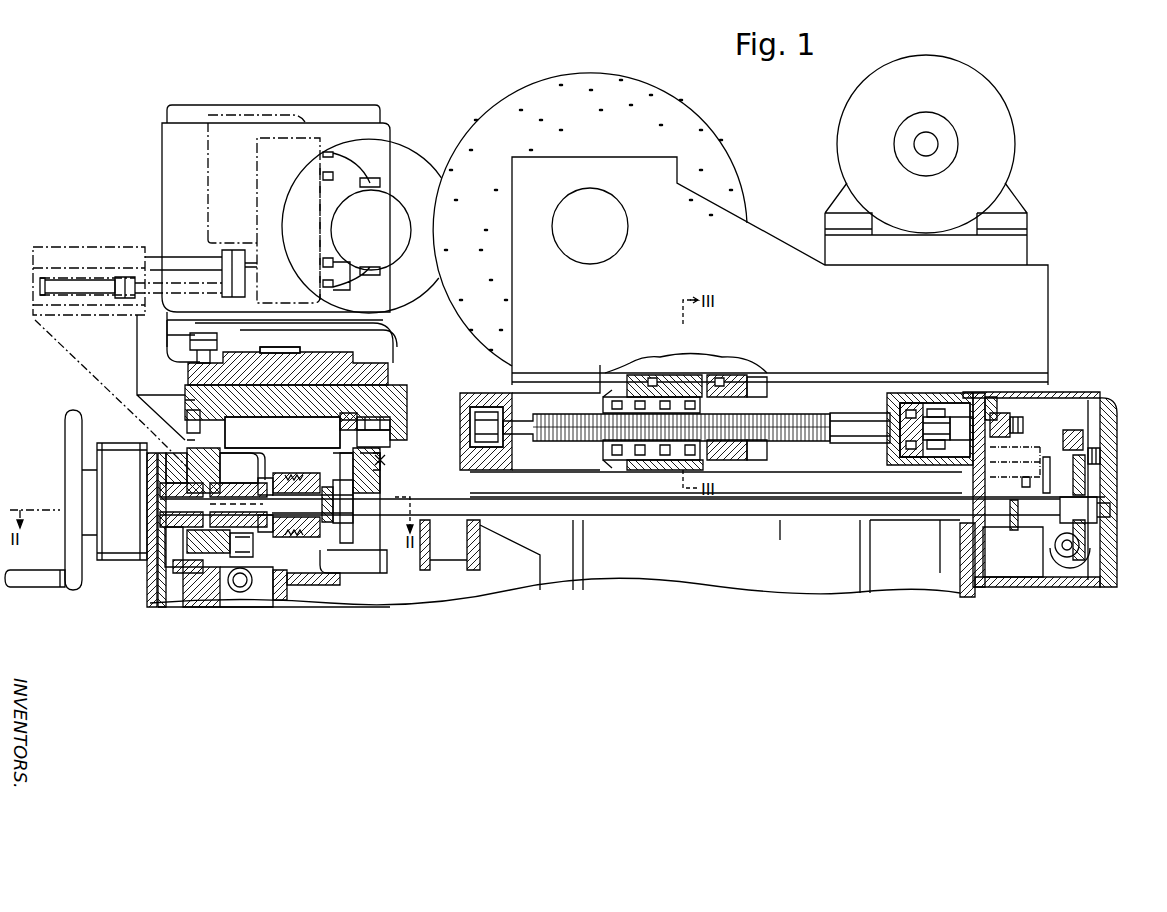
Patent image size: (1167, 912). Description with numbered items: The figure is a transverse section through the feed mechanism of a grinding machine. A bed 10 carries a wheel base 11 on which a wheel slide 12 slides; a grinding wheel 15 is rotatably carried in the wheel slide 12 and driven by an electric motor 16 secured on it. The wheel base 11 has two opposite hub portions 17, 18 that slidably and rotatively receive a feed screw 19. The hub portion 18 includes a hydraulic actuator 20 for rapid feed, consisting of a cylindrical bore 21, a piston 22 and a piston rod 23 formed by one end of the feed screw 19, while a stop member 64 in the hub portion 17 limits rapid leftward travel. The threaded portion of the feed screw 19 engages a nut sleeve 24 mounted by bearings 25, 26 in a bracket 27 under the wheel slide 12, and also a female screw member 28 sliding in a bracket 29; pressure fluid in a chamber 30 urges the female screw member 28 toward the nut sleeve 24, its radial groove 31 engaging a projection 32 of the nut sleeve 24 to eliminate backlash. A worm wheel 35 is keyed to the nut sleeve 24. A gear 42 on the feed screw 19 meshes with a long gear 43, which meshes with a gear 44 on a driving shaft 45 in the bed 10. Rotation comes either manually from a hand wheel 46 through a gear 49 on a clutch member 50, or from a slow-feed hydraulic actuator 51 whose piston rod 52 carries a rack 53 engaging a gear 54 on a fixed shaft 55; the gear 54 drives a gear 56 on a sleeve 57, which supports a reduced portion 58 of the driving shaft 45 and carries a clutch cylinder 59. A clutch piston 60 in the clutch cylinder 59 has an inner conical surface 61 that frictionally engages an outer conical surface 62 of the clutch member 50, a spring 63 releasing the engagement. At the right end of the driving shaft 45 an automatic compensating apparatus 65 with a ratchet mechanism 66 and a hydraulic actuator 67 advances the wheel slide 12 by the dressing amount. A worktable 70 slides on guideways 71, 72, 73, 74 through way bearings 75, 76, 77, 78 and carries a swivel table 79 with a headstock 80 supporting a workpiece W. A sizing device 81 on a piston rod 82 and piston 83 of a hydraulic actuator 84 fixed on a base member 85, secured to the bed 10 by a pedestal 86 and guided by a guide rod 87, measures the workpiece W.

The bed 10 is at (961, 581).
The wheel base 11 is at (555, 562).
The wheel slide 12 is at (755, 253).
The grinding wheel 15 is at (690, 125).
The electric motor 16 is at (1008, 130).
The hub portion 17 is at (754, 413).
The hub portion 18 is at (875, 393).
The feed screw 19 is at (782, 442).
The hydraulic actuator 20 is at (964, 416).
The cylindrical bore 21 is at (938, 416).
The piston 22 is at (908, 401).
The piston rod 23 is at (945, 406).
The nut sleeve 24 is at (603, 460).
The bearing 25 is at (593, 370).
The bearing 26 is at (690, 375).
The bracket 27 is at (787, 517).
The female screw member 28 is at (758, 413).
The bracket 29 is at (762, 541).
The chamber 30 is at (753, 383).
The radial groove 31 is at (722, 376).
The projection 32 is at (573, 555).
The worm wheel 35 is at (633, 555).
The gear 42 is at (987, 394).
The gear 43 is at (1027, 443).
The gear 44 is at (1013, 538).
The driving shaft 45 is at (900, 522).
The hand wheel 46 is at (73, 592).
The gear 49 is at (305, 543).
The clutch member 50 is at (315, 595).
The hydraulic actuator 51 is at (180, 610).
The piston rod 52 is at (222, 600).
The rack 53 is at (238, 585).
The gear 54 is at (170, 610).
The shaft 55 is at (120, 610).
The gear 56 is at (265, 484).
The sleeve 57 is at (88, 402).
The reduced portion 58 is at (188, 441).
The clutch cylinder 59 is at (250, 590).
The clutch piston 60 is at (229, 551).
The inner conical surface 61 is at (263, 476).
The outer conical surface 62 is at (292, 471).
The spring 63 is at (320, 474).
The stop member 64 is at (556, 403).
The automatic grinding wheel compensating apparatus 65 is at (1102, 392).
The ratchet mechanism 66 is at (1103, 450).
The hydraulic actuator 67 is at (1053, 567).
The worktable 70 is at (392, 390).
The guideway 71 is at (188, 414).
The guideway 72 is at (390, 425).
The guideway 73 is at (360, 565).
The guideway 74 is at (393, 447).
The way bearing 75 is at (360, 416).
The way bearing 76 is at (392, 465).
The way bearing 77 is at (388, 363).
The way bearing 78 is at (238, 475).
The swivel table 79 is at (391, 340).
The headstock 80 is at (373, 108).
The sizing device 81 is at (293, 117).
The piston rod 82 is at (183, 290).
The piston 83 is at (122, 272).
The hydraulic actuator 84 is at (53, 269).
The base member 85 is at (125, 246).
The pedestal 86 is at (195, 350).
The guide rod 87 is at (173, 257).
The workpiece W is at (388, 208).